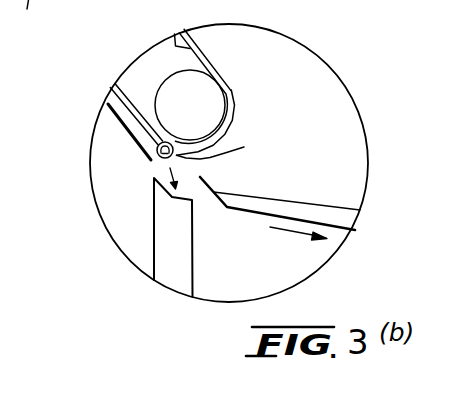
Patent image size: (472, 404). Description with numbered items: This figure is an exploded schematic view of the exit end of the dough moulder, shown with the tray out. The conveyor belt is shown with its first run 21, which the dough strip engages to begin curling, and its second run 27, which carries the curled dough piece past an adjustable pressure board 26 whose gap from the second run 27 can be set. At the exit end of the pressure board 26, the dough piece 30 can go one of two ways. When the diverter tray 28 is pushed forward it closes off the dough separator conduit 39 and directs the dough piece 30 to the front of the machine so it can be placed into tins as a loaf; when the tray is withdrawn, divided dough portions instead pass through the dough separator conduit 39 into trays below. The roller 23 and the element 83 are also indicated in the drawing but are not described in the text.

The first run 21 is at (173, 37).
The roller 23 is at (148, 163).
The pressure board 26 is at (117, 122).
The second run 27 is at (131, 83).
The diverter tray 28 is at (275, 210).
The dough piece 30 is at (230, 147).
The dough separator conduit 39 is at (180, 234).
The frame 83 is at (14, 16).